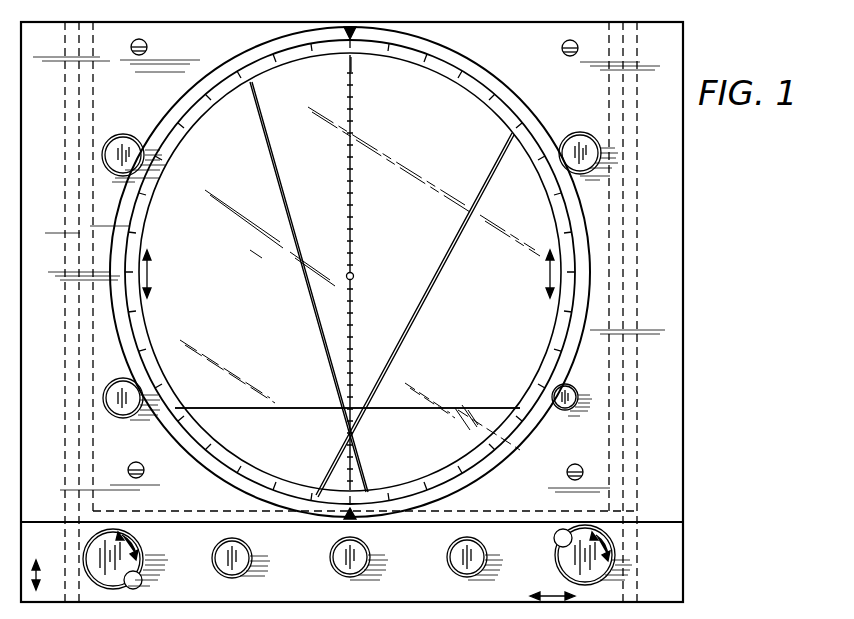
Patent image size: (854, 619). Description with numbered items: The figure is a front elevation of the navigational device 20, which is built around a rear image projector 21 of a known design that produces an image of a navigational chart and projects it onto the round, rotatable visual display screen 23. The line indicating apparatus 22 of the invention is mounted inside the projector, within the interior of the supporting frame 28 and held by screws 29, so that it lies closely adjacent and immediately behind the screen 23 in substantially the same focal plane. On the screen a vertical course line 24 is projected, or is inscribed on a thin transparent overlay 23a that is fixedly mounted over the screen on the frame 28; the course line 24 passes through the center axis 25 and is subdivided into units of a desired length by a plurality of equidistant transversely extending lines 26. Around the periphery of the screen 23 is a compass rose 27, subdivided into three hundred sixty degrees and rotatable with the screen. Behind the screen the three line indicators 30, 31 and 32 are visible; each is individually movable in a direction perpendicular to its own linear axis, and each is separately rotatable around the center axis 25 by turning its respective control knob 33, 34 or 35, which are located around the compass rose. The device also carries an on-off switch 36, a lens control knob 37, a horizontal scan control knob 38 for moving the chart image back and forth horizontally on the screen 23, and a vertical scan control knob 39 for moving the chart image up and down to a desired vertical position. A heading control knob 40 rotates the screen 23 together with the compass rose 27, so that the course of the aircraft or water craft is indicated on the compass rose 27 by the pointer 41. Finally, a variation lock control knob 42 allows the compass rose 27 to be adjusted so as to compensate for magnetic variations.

The navigational device 20 is at (688, 247).
The rear image projector 21 is at (515, 501).
The line indicating apparatus 22 is at (637, 205).
The visual display screen 23 is at (502, 305).
The transparent overlay 23a is at (184, 102).
The course line 24 is at (350, 200).
The center axis 25 is at (353, 278).
The transversely extending lines 26 is at (352, 321).
The compass rose 27 is at (546, 378).
The supporting frame 28 is at (684, 497).
The screws 29 is at (155, 41).
The line indicator 30 is at (276, 164).
The line indicator 31 is at (228, 408).
The line indicator 32 is at (332, 462).
The control knob 33 is at (601, 153).
The control knob 34 is at (127, 160).
The control knob 35 is at (124, 388).
The on-off switch 36 is at (250, 557).
The lens control knob 37 is at (485, 554).
The horizontal scan control knob 38 is at (615, 556).
The vertical scan control knob 39 is at (143, 562).
The heading control knob 40 is at (368, 555).
The pointer 41 is at (358, 60).
The variation lock control knob 42 is at (572, 390).